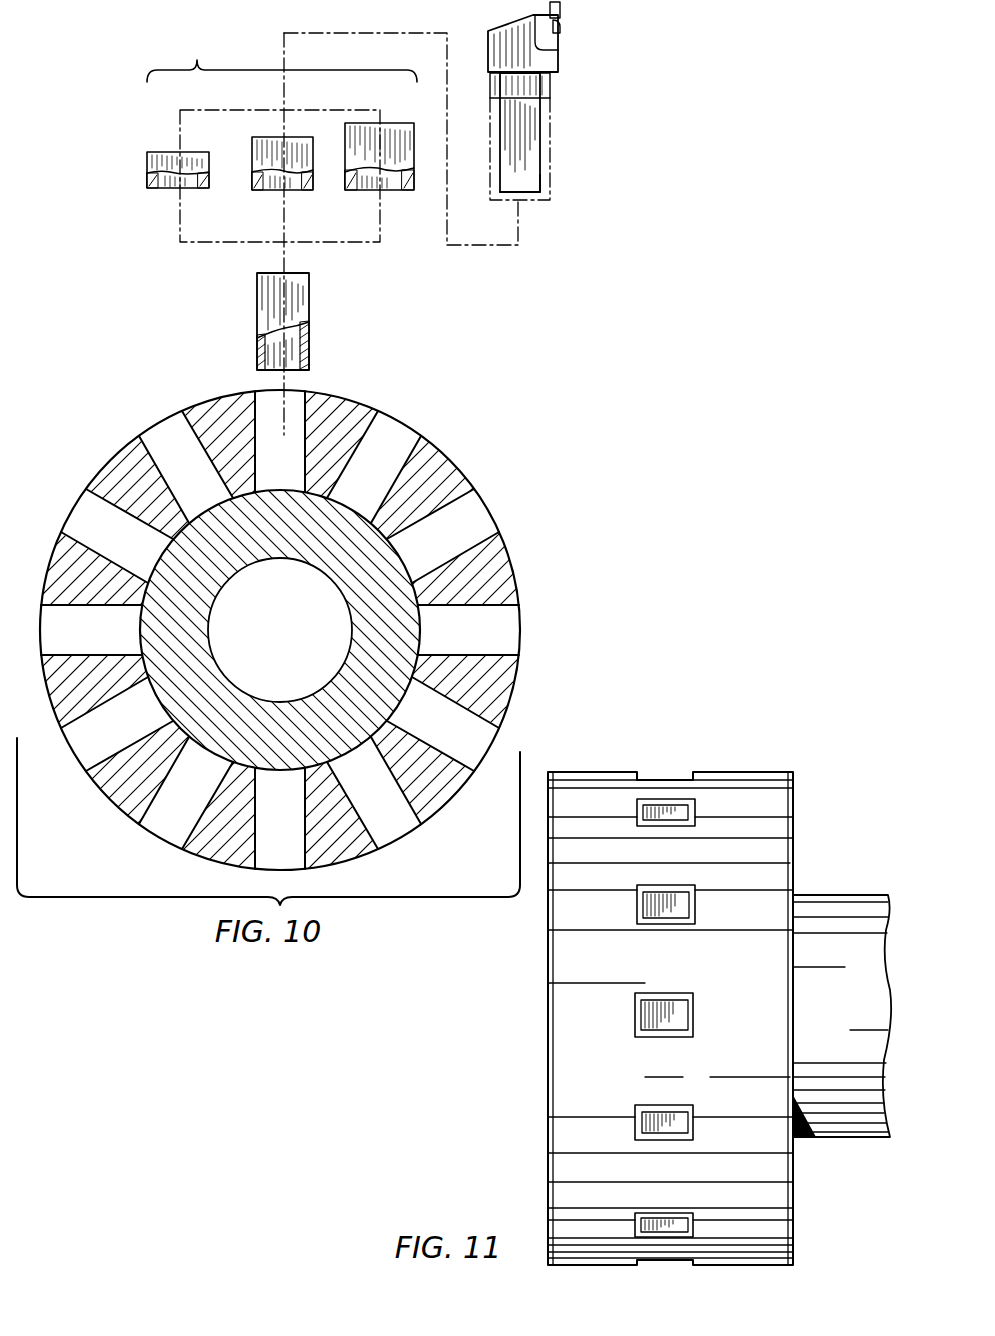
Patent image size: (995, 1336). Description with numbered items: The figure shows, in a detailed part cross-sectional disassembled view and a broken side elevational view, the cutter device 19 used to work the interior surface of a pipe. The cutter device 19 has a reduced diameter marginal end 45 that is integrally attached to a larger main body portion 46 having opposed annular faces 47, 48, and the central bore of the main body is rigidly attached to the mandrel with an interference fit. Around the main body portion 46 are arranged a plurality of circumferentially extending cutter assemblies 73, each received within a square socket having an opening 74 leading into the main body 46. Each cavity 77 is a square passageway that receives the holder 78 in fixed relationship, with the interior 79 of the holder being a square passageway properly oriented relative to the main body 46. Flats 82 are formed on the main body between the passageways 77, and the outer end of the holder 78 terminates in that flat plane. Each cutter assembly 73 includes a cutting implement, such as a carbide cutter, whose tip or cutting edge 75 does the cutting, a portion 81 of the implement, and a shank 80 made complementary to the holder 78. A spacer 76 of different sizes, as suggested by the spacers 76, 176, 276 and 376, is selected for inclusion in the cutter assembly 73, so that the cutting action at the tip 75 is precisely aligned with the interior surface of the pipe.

In FIG. 10, the cutter device 19 is at (186, 350).
In FIG. 11, the cutter device 19 is at (789, 740).
In FIG. 11, the reduced diameter marginal end 45 is at (866, 895).
In FIG. 10, the main body portion 46 is at (521, 576).
In FIG. 11, the main body portion 46 is at (780, 786).
In FIG. 11, the annular face 47 is at (795, 858).
In FIG. 10, the annular face 48 is at (233, 398).
In FIG. 11, the annular face 48 is at (546, 1070).
In FIG. 10, the cutter assembly 73 is at (603, 125).
In FIG. 11, the cutter assembly 73 is at (704, 900).
In FIG. 10, the socket opening 74 is at (306, 394).
In FIG. 11, the socket opening 74 is at (676, 827).
In FIG. 10, the cutting edge tip 75 is at (558, 3).
In FIG. 10, the spacer 76 is at (282, 138).
In FIG. 10, the cavity 77 is at (366, 478).
In FIG. 10, the holder 78 is at (310, 300).
In FIG. 10, the holder interior 79 is at (300, 344).
In FIG. 10, the shank 80 is at (532, 172).
In FIG. 10, the cutting implement part 81 is at (558, 70).
In FIG. 10, the flats 82 is at (456, 461).
In FIG. 10, the spacer 176 is at (183, 190).
In FIG. 10, the spacer 276 is at (290, 192).
In FIG. 10, the spacer 376 is at (383, 192).